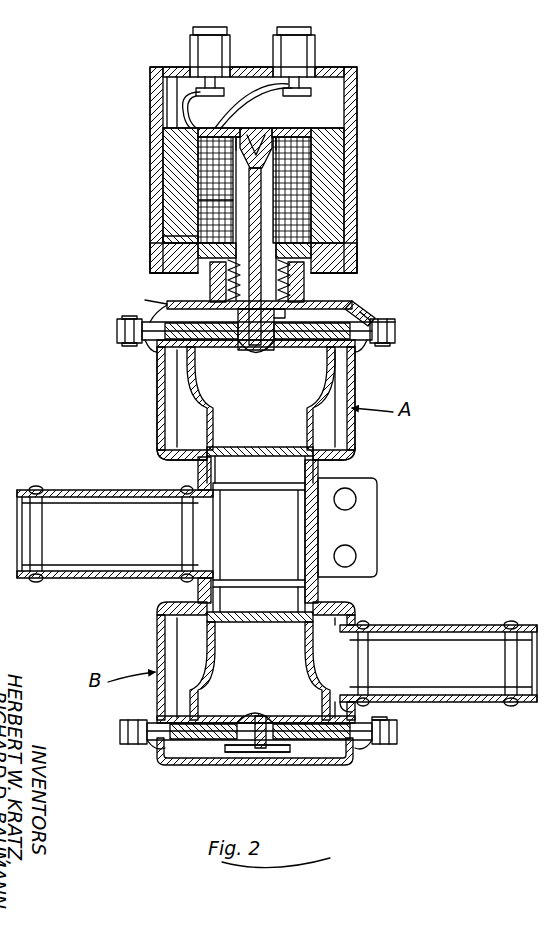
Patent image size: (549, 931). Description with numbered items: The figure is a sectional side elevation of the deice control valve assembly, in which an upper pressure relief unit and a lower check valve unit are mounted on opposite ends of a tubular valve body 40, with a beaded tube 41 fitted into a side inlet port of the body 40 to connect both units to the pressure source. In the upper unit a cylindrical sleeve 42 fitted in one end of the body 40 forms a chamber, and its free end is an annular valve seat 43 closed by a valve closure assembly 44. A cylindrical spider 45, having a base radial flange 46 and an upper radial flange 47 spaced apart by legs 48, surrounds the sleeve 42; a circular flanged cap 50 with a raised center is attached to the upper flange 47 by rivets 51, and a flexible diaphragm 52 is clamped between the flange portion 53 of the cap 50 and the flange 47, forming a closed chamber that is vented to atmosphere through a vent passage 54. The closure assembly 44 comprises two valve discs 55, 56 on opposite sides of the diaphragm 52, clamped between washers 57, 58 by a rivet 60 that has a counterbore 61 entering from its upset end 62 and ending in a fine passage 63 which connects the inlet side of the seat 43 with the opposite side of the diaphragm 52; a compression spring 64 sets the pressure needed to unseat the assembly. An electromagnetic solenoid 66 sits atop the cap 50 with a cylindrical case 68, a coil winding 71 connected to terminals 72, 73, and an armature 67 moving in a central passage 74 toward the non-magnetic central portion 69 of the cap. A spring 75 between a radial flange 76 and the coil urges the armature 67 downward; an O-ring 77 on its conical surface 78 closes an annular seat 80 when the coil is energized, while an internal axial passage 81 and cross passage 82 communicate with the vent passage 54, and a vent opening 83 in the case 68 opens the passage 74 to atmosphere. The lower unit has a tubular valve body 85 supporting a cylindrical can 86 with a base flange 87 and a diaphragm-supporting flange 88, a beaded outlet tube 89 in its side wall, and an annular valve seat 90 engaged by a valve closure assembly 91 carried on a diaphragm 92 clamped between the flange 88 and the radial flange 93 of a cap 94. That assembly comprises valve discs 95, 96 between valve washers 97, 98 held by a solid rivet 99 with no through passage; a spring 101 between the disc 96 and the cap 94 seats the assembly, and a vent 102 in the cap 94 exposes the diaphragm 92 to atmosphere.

The tubular valve body 40 is at (335, 470).
The beaded tube 41 is at (66, 490).
The cylindrical sleeve 42 is at (190, 410).
The annular valve seat 43 is at (260, 432).
The valve closure assembly 44 is at (200, 303).
The cylindrical spider 45 is at (160, 373).
The base radial flange 46 is at (175, 462).
The upper radial flange 47 is at (396, 337).
The legs 48 is at (345, 422).
The circular flanged cap 50 is at (395, 306).
The rivets 51 is at (126, 344).
The flexible diaphragm 52 is at (117, 332).
The flange portion 53 is at (117, 324).
The vent passage 54 is at (174, 259).
The valve disc 55 is at (378, 312).
The valve disc 56 is at (350, 360).
The washer 57 is at (355, 304).
The washer 58 is at (198, 365).
The rivet 60 is at (270, 352).
The counterbore 61 is at (244, 350).
The upset end 62 is at (226, 318).
The fine passage 63 is at (256, 352).
The compression spring 64 is at (300, 300).
The electromagnetic solenoid 66 is at (360, 125).
The armature 67 is at (310, 235).
The cylindrical case 68 is at (150, 101).
The central portion 69 is at (352, 270).
The coil winding 71 is at (344, 223).
The terminal 72 is at (190, 48).
The terminal 73 is at (316, 48).
The central passage 74 is at (264, 208).
The spring 75 is at (165, 248).
The radial flange 76 is at (334, 259).
The O-ring 77 is at (276, 157).
The conical surface 78 is at (290, 135).
The annular seat 80 is at (262, 135).
The internal axial passage 81 is at (246, 222).
The internal cross passage 82 is at (245, 186).
The vent opening 83 is at (254, 67).
The tubular valve body 85 is at (214, 668).
The cylindrical can 86 is at (160, 642).
The base flange 87 is at (170, 607).
The diaphragm-supporting flange 88 is at (400, 722).
The beaded outlet tube 89 is at (442, 626).
The annular valve seat 90 is at (170, 722).
The valve closure assembly 91 is at (175, 746).
The diaphragm 92 is at (122, 740).
The radial flange 93 is at (398, 740).
The cap 94 is at (360, 750).
The valve disc 95 is at (345, 700).
The valve disc 96 is at (332, 762).
The valve washer 97 is at (292, 718).
The valve washer 98 is at (226, 750).
The solid rivet 99 is at (256, 712).
The spring 101 is at (287, 752).
The vent 102 is at (258, 756).